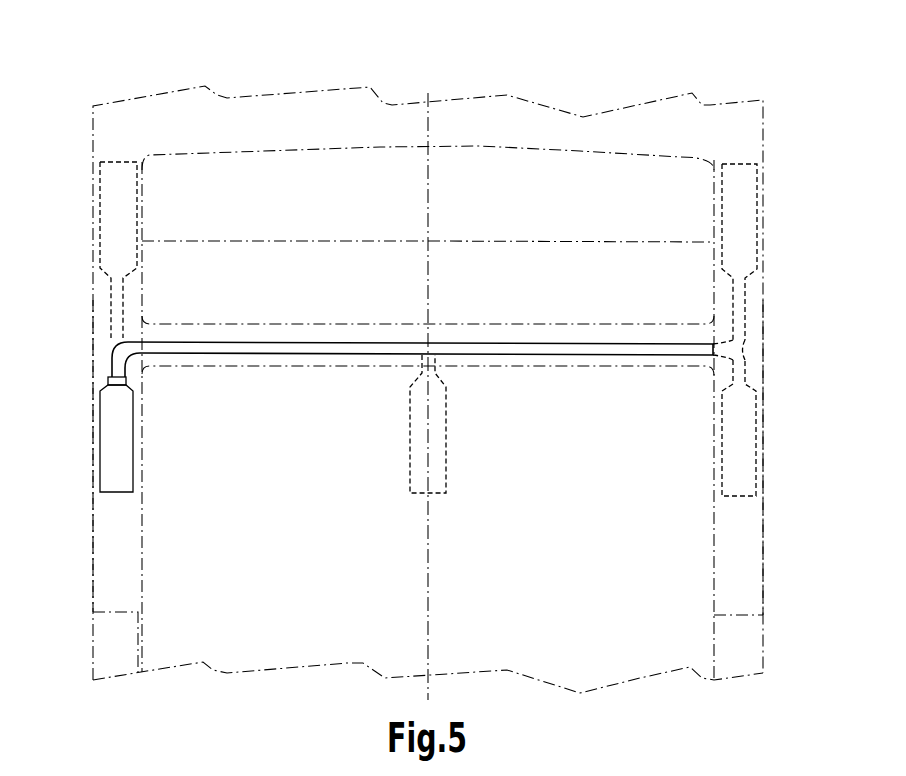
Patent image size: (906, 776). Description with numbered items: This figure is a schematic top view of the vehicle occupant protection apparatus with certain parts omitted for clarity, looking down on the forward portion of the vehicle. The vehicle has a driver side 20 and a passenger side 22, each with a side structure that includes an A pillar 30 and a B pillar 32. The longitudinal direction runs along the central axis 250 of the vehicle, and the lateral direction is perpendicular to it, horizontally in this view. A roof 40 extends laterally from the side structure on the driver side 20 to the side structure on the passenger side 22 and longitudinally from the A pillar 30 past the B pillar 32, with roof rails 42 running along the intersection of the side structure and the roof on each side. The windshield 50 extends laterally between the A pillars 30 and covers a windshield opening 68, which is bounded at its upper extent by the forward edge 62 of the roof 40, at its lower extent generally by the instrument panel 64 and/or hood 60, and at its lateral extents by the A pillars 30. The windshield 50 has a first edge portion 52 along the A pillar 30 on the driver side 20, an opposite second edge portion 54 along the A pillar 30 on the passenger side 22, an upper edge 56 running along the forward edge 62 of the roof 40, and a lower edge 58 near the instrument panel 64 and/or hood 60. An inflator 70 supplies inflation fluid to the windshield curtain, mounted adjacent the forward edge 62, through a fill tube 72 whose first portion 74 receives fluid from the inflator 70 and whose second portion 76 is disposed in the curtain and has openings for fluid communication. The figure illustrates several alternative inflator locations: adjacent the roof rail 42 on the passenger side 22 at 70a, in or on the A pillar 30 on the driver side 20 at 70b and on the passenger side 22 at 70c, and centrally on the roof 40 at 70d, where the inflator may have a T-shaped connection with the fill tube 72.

The driver side 20 is at (186, 697).
The passenger side 22 is at (586, 716).
The A pillar 30 is at (105, 285).
The B pillar 32 is at (112, 637).
The roof 40 is at (353, 608).
The roof rails 42 is at (112, 532).
The windshield 50 is at (475, 178).
The first edge portion 52 is at (140, 222).
The second edge portion 54 is at (720, 218).
The upper edge 56 is at (343, 322).
The lower edge 58 is at (330, 148).
The hood 60 is at (270, 125).
The forward edge 62 is at (563, 363).
The instrument panel 64 is at (487, 207).
The windshield opening 68 is at (583, 178).
The inflator 70 is at (112, 447).
The inflator position adjacent roof rail 70a is at (742, 440).
The inflator position on driver side A pillar 70b is at (133, 184).
The inflator position on passenger side A pillar 70c is at (742, 218).
The inflator position centrally on roof 70d is at (435, 425).
The fill tube 72 is at (193, 343).
The first portion 74 is at (112, 362).
The second portion 76 is at (370, 347).
The central axis 250 is at (428, 590).